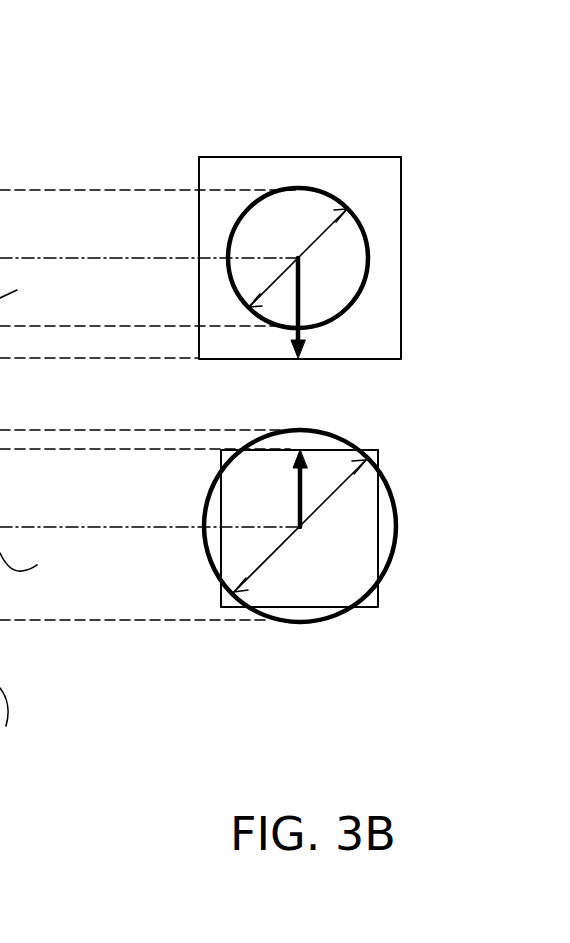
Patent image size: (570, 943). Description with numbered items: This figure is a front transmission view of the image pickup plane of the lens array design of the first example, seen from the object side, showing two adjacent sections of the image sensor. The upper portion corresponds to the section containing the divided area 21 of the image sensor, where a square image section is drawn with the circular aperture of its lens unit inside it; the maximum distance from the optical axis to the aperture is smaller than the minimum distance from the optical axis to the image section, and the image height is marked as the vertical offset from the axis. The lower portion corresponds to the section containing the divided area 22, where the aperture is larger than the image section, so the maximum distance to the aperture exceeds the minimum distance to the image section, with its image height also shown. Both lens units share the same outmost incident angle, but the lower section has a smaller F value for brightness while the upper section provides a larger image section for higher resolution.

The divided area of the image sensor 21 is at (148, 119).
The divided area of the image sensor 22 is at (135, 693).